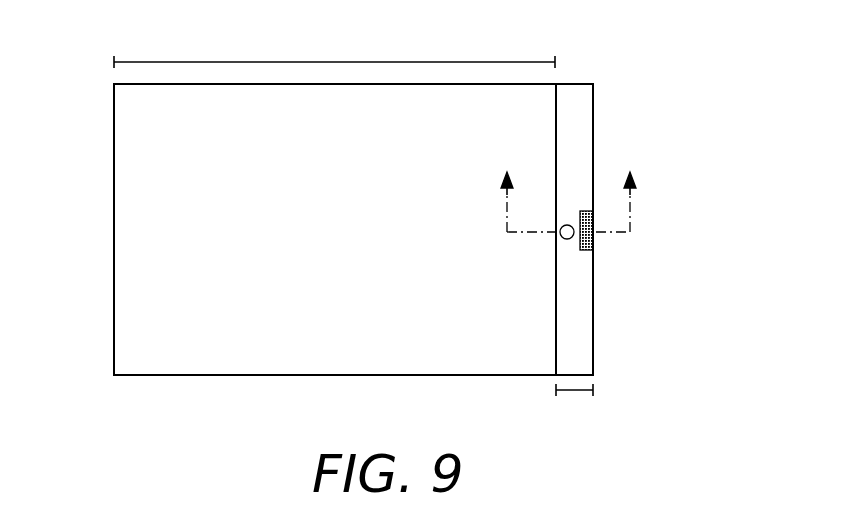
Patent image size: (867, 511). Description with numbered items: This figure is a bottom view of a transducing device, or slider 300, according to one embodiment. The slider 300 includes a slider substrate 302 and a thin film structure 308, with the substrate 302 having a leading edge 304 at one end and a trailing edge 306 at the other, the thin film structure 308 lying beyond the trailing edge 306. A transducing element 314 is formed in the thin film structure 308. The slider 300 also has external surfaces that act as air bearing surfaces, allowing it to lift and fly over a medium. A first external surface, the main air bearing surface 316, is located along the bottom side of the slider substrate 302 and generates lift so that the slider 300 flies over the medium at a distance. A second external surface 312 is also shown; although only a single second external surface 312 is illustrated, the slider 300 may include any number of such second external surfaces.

The slider 300 is at (650, 87).
The slider substrate 302 is at (335, 62).
The leading edge 304 is at (114, 200).
The trailing edge 306 is at (551, 97).
The thin film structure 308 is at (565, 391).
The second external surface 312 is at (593, 237).
The transducing element 314 is at (567, 239).
The main air bearing surface 316 is at (519, 243).